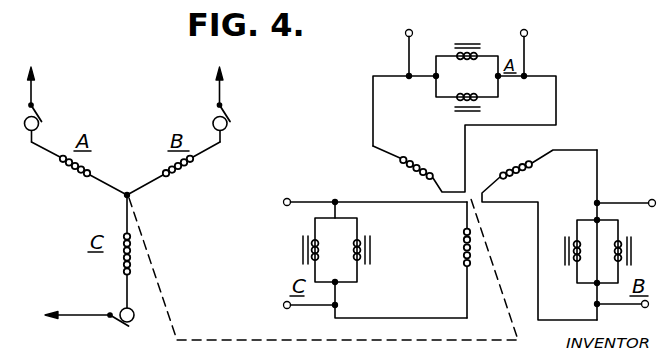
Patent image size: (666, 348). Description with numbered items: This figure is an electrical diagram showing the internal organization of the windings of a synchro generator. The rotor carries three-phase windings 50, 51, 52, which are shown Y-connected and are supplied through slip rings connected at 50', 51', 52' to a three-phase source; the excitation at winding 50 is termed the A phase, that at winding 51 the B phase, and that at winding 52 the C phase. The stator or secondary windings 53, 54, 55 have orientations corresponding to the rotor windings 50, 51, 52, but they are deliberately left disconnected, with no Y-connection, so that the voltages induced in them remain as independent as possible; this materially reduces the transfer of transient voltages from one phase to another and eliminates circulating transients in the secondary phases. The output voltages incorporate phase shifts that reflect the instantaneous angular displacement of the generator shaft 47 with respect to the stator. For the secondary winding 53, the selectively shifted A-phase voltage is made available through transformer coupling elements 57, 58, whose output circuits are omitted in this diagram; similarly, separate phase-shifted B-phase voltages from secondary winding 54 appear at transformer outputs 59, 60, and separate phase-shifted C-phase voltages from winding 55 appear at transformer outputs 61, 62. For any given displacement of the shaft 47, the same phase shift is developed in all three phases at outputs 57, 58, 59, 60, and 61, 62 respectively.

The generator shaft 47 is at (160, 287).
The rotor winding 50 is at (80, 175).
The rotor winding 51 is at (173, 173).
The rotor winding 52 is at (108, 251).
The slip ring connection 50' is at (51, 104).
The slip ring connection 51' is at (241, 104).
The slip ring connection 52' is at (89, 328).
The secondary winding 53 is at (413, 159).
The secondary winding 54 is at (530, 166).
The secondary winding 55 is at (462, 246).
The transformer coupling element 57 is at (467, 97).
The transformer coupling element 58 is at (470, 61).
The transformer output 59 is at (578, 246).
The transformer output 60 is at (616, 249).
The transformer output 61 is at (357, 250).
The transformer output 62 is at (319, 247).